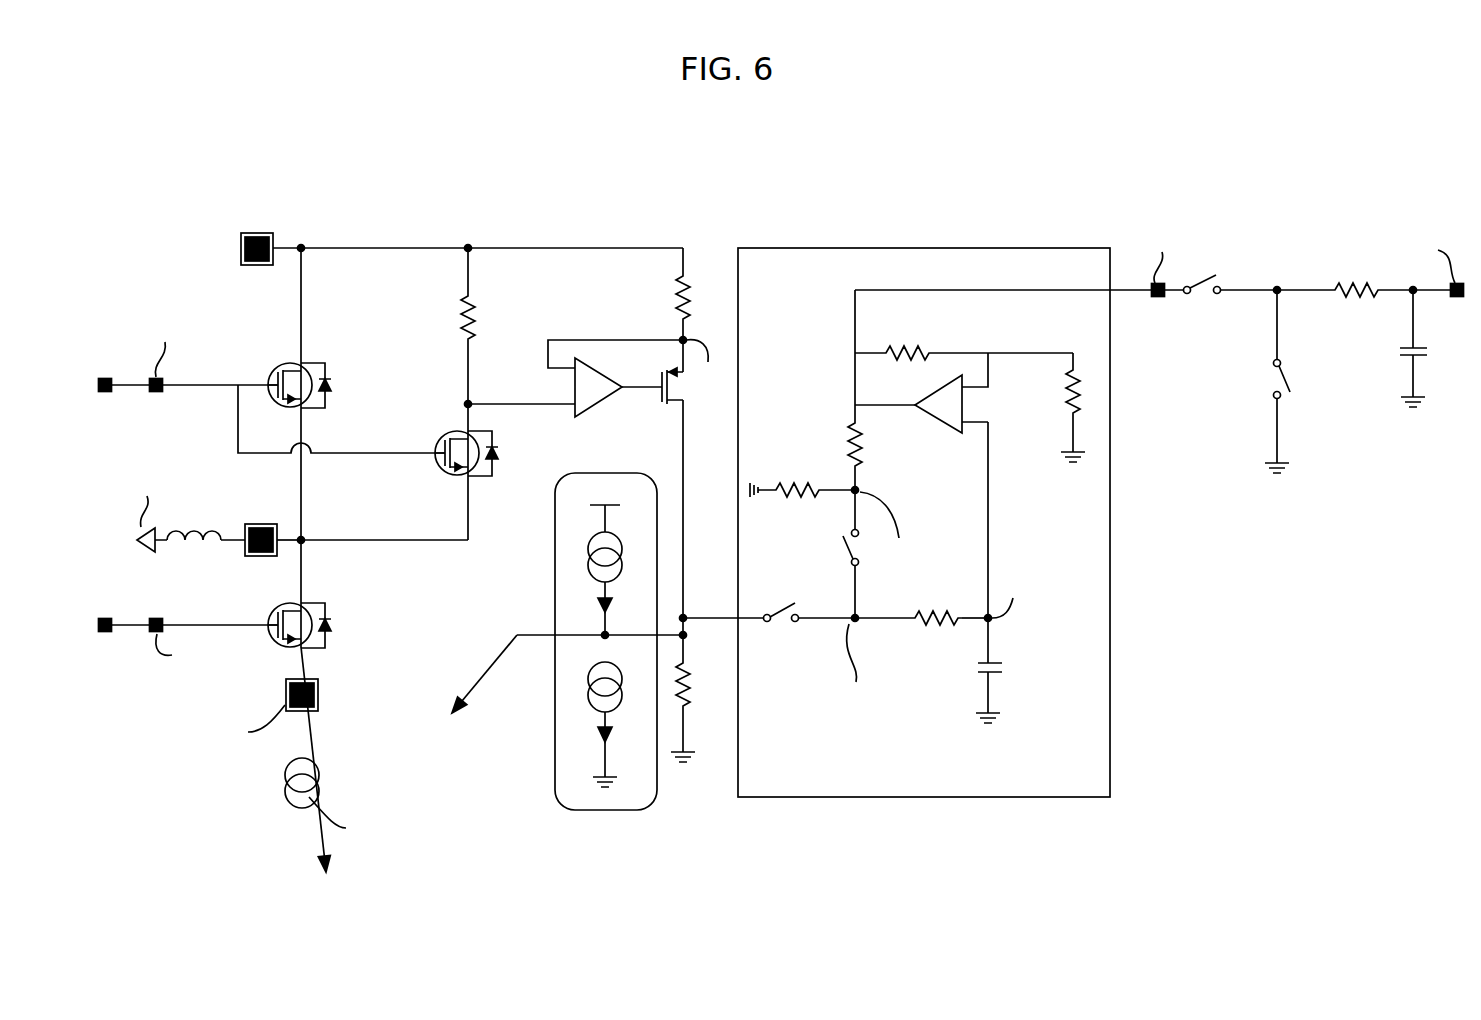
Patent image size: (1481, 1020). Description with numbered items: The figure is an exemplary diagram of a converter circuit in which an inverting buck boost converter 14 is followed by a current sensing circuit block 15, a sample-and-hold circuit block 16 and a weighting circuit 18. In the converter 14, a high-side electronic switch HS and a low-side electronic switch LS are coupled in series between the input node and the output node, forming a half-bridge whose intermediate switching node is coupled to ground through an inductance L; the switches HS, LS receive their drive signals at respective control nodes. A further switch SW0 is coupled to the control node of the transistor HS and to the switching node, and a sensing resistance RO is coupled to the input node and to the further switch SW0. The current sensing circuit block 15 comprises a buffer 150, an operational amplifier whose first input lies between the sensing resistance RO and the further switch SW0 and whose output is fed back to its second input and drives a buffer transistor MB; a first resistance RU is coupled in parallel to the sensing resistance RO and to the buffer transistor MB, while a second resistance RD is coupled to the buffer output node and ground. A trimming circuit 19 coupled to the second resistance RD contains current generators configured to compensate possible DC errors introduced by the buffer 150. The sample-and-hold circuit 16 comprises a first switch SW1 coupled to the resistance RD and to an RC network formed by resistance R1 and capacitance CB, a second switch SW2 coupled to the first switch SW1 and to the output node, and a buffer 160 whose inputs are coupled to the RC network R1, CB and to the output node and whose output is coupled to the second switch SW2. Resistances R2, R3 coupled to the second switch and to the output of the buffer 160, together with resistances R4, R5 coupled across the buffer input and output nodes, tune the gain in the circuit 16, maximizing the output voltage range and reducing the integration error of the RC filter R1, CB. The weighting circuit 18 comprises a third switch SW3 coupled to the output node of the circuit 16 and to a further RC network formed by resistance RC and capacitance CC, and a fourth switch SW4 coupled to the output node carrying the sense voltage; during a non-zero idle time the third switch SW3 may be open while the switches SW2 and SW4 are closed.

The inverting buck boost converter 14 is at (391, 522).
The current sensing circuit block 15 is at (596, 467).
The sample-and-hold circuit block 16 is at (917, 490).
The weighting circuit 18 is at (1308, 295).
The trimming circuit 19 is at (597, 806).
The buffer 150 is at (595, 398).
The buffer 160 is at (959, 400).
The high-side electronic switch HS is at (320, 364).
The low-side electronic switch LS is at (310, 614).
The inductance L is at (195, 527).
The sensing resistance RO is at (477, 321).
The further switch SW0 is at (455, 476).
The first resistance RU is at (677, 311).
The buffer transistor MB is at (668, 406).
The second resistance RD is at (697, 690).
The RC network resistance R1 is at (942, 630).
The gain tuning resistance R2 is at (802, 478).
The gain tuning resistance R3 is at (863, 448).
The gain tuning resistance R4 is at (913, 343).
The gain tuning resistance R5 is at (1080, 400).
The first switch SW1 is at (778, 622).
The second switch SW2 is at (845, 548).
The third switch SW3 is at (1206, 294).
The fourth switch SW4 is at (1275, 376).
The RC network capacitance CB is at (1004, 663).
The further RC network resistance RC is at (1353, 282).
The further RC network capacitance CC is at (1425, 354).